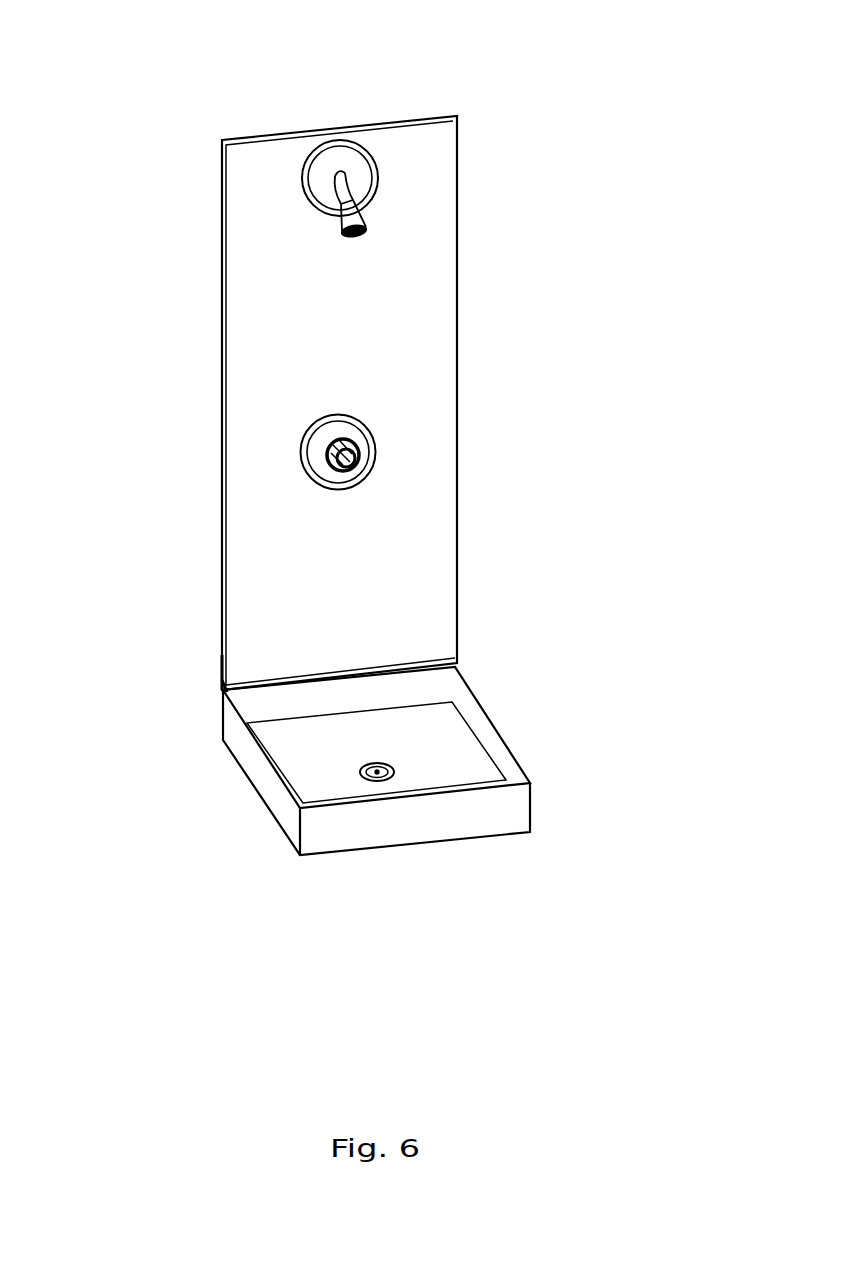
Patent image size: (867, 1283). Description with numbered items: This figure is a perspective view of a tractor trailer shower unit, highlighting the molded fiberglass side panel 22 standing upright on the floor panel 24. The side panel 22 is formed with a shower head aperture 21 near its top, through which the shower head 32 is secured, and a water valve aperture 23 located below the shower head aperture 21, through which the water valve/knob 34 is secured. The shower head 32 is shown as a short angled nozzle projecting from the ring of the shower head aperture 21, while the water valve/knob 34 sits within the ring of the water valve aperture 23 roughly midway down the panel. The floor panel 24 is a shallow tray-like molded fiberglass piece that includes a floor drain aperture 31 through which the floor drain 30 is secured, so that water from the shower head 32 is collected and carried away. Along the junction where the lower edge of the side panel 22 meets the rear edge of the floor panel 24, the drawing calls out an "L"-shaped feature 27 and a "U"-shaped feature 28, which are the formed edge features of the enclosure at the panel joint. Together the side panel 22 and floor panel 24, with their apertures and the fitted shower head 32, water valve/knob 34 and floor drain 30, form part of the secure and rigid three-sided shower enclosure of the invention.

The showerhead aperture 21 is at (338, 176).
The side panel 22 is at (230, 318).
The water valve aperture 23 is at (323, 445).
The floor panel 24 is at (258, 800).
The "L"-shaped feature 27 is at (222, 660).
The "U"-shaped feature 28 is at (222, 686).
The floor drain 30 is at (390, 765).
The floor drain aperture 31 is at (397, 777).
The shower head 32 is at (355, 222).
The water valve/knob 34 is at (370, 458).